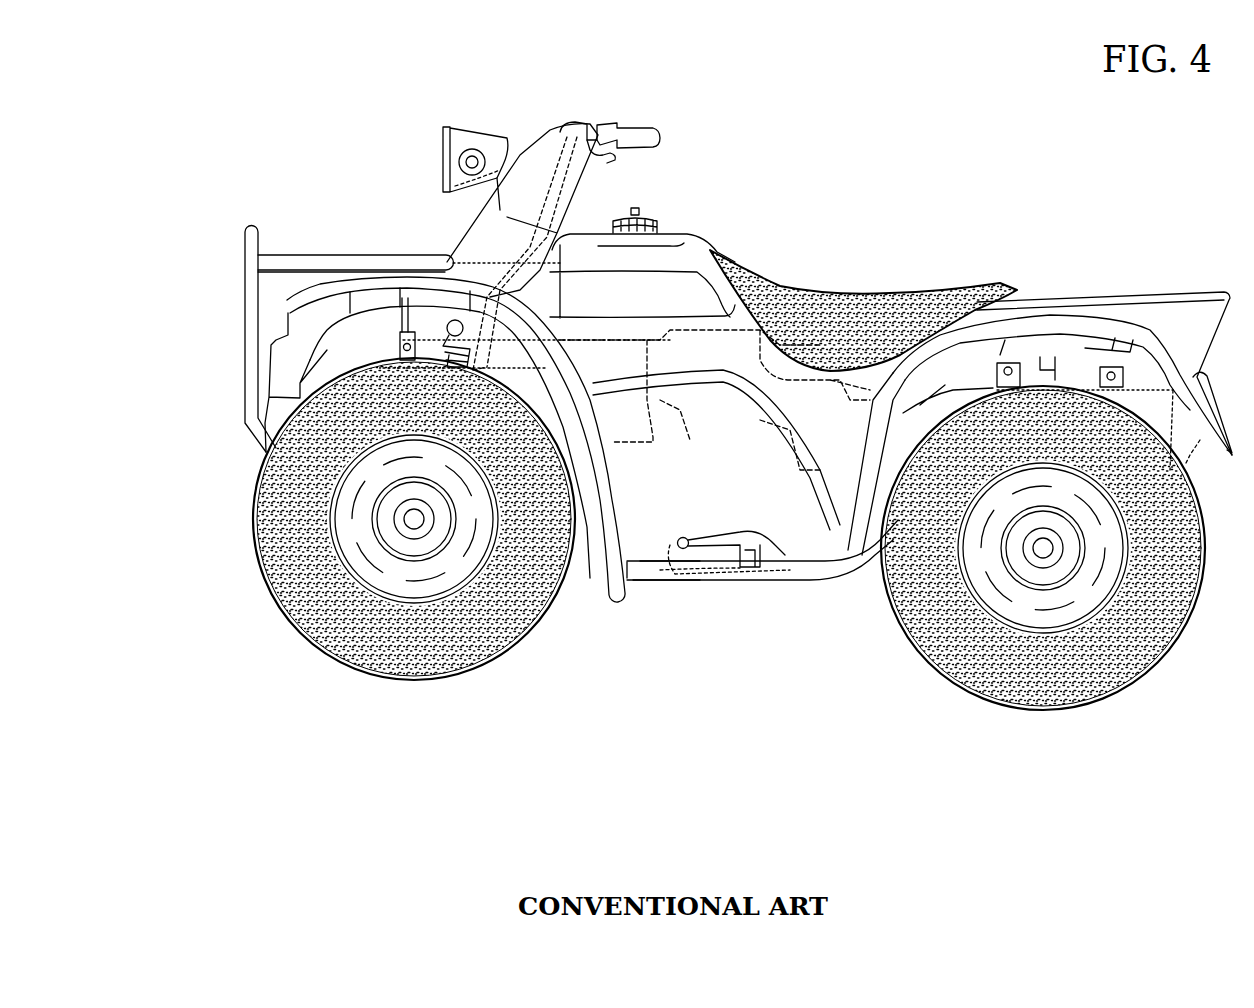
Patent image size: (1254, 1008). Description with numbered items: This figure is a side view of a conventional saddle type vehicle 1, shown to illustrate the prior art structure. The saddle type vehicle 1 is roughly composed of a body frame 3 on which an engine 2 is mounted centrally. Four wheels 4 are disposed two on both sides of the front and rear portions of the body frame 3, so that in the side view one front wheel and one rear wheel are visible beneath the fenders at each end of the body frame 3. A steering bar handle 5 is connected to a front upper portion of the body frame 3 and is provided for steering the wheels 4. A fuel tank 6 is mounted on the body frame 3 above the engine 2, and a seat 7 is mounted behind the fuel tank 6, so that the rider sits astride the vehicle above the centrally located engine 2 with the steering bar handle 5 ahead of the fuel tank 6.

The saddle type vehicle 1 is at (737, 240).
The engine 2 is at (792, 520).
The body frame 3 is at (672, 600).
The wheels 4 is at (262, 590).
The steering bar handle 5 is at (610, 136).
The fuel tank 6 is at (690, 256).
The seat 7 is at (862, 305).